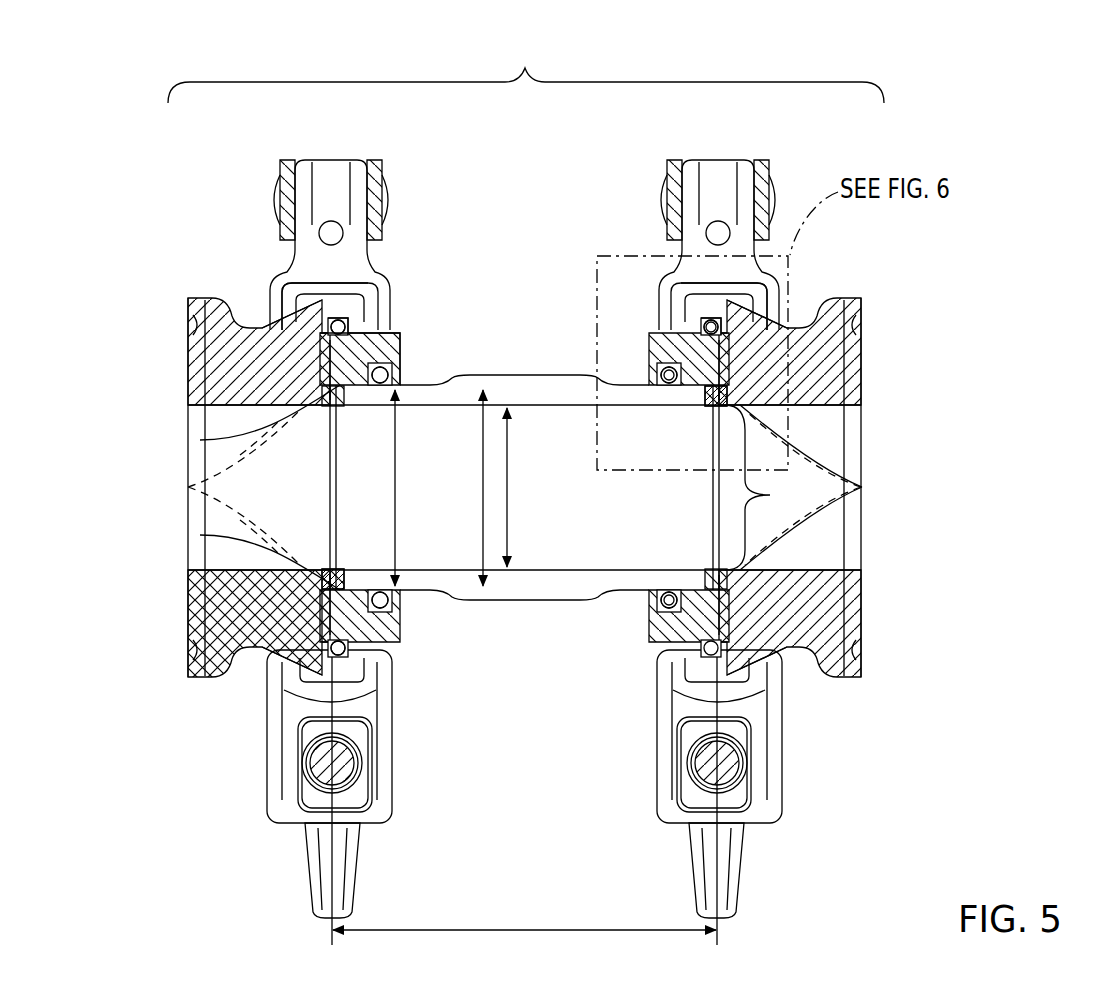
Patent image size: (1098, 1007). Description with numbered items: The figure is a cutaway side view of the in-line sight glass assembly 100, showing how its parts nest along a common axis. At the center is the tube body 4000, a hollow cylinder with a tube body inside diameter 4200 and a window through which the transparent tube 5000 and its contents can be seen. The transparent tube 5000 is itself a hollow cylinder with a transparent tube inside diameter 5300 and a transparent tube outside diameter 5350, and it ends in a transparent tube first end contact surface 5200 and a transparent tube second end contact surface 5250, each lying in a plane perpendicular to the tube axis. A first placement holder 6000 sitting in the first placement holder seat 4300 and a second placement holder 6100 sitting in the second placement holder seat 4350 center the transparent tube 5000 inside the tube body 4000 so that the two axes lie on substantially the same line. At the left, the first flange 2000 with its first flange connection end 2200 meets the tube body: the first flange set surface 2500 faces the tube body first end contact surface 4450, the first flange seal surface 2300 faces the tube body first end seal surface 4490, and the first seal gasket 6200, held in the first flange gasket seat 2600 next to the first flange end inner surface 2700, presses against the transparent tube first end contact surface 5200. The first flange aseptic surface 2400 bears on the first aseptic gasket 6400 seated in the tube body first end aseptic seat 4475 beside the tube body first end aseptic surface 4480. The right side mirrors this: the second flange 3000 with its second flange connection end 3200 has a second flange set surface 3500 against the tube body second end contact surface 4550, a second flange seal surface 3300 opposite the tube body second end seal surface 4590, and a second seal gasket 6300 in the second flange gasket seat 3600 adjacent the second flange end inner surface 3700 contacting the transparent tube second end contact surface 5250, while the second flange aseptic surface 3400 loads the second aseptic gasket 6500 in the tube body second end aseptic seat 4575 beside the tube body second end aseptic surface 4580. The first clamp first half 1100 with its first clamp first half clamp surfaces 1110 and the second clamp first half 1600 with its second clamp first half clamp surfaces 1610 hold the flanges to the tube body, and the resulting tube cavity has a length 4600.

The assembly 100 is at (525, 66).
The first clamp first half 1100 is at (336, 160).
The first clamp first half clamp surfaces 1110 is at (303, 302).
The second clamp first half 1600 is at (718, 160).
The second clamp first half clamp surfaces 1610 is at (785, 305).
The first flange 2000 is at (240, 652).
The first flange connection end 2200 is at (196, 296).
The first flange seal surface 2300 is at (330, 398).
The first flange aseptic surface 2400 is at (325, 305).
The first flange set surface 2500 is at (335, 360).
The first flange gasket seat 2600 is at (188, 487).
The first flange end inner surface 2700 is at (287, 418).
The second flange 3000 is at (820, 652).
The second flange connection end 3200 is at (854, 296).
The second flange seal surface 3300 is at (719, 398).
The second flange aseptic surface 3400 is at (724, 305).
The second flange set surface 3500 is at (714, 360).
The second flange gasket seat 3600 is at (780, 418).
The second flange end inner surface 3700 is at (775, 495).
The tube body 4000 is at (392, 642).
The tube body inside diameter 4200 is at (396, 505).
The first placement holder seat 4300 is at (398, 362).
The second placement holder seat 4350 is at (703, 322).
The tube body first end contact surface 4450 is at (380, 348).
The tube body first end aseptic seat 4475 is at (345, 328).
The tube body first end aseptic surface 4480 is at (308, 335).
The tube body first end seal surface 4490 is at (345, 583).
The tube body second end contact surface 4550 is at (708, 392).
The tube body second end aseptic seat 4575 is at (705, 322).
The tube body second end aseptic surface 4580 is at (713, 322).
The tube body second end seal surface 4590 is at (712, 393).
The length of the tube cavity 4600 is at (518, 928).
The transparent tube 5000 is at (508, 378).
The transparent tube first end contact surface 5200 is at (336, 420).
The transparent tube second end contact surface 5250 is at (712, 393).
The transparent tube inside diameter 5300 is at (508, 505).
The transparent tube outside diameter 5350 is at (482, 460).
The first placement holder 6000 is at (386, 372).
The second placement holder 6100 is at (690, 360).
The first seal gasket 6200 is at (340, 385).
The second seal gasket 6300 is at (862, 487).
The first aseptic gasket 6400 is at (345, 618).
The second aseptic gasket 6500 is at (667, 370).